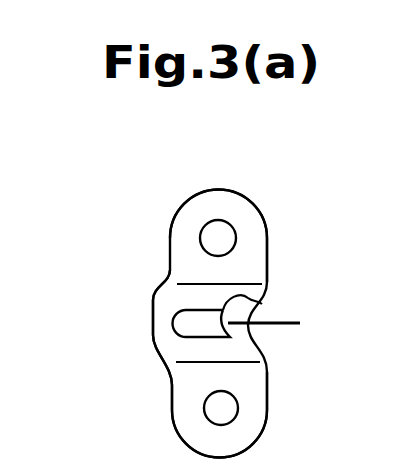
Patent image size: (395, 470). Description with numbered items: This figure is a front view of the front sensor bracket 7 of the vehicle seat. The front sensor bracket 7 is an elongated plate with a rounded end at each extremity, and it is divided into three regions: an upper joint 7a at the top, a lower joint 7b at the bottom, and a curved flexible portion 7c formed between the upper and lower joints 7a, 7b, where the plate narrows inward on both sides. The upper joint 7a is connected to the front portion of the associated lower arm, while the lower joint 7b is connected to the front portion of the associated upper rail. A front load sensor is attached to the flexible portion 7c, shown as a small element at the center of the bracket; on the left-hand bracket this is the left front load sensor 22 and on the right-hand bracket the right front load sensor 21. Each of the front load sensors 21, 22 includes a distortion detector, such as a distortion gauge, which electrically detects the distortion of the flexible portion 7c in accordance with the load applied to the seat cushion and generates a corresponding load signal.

The front sensor bracket 7 is at (282, 237).
The upper joint 7a is at (266, 258).
The lower joint 7b is at (268, 393).
The curved flexible portion 7c is at (158, 336).
The left front load sensor 22 is at (260, 303).
The right front load sensor 21 is at (303, 304).